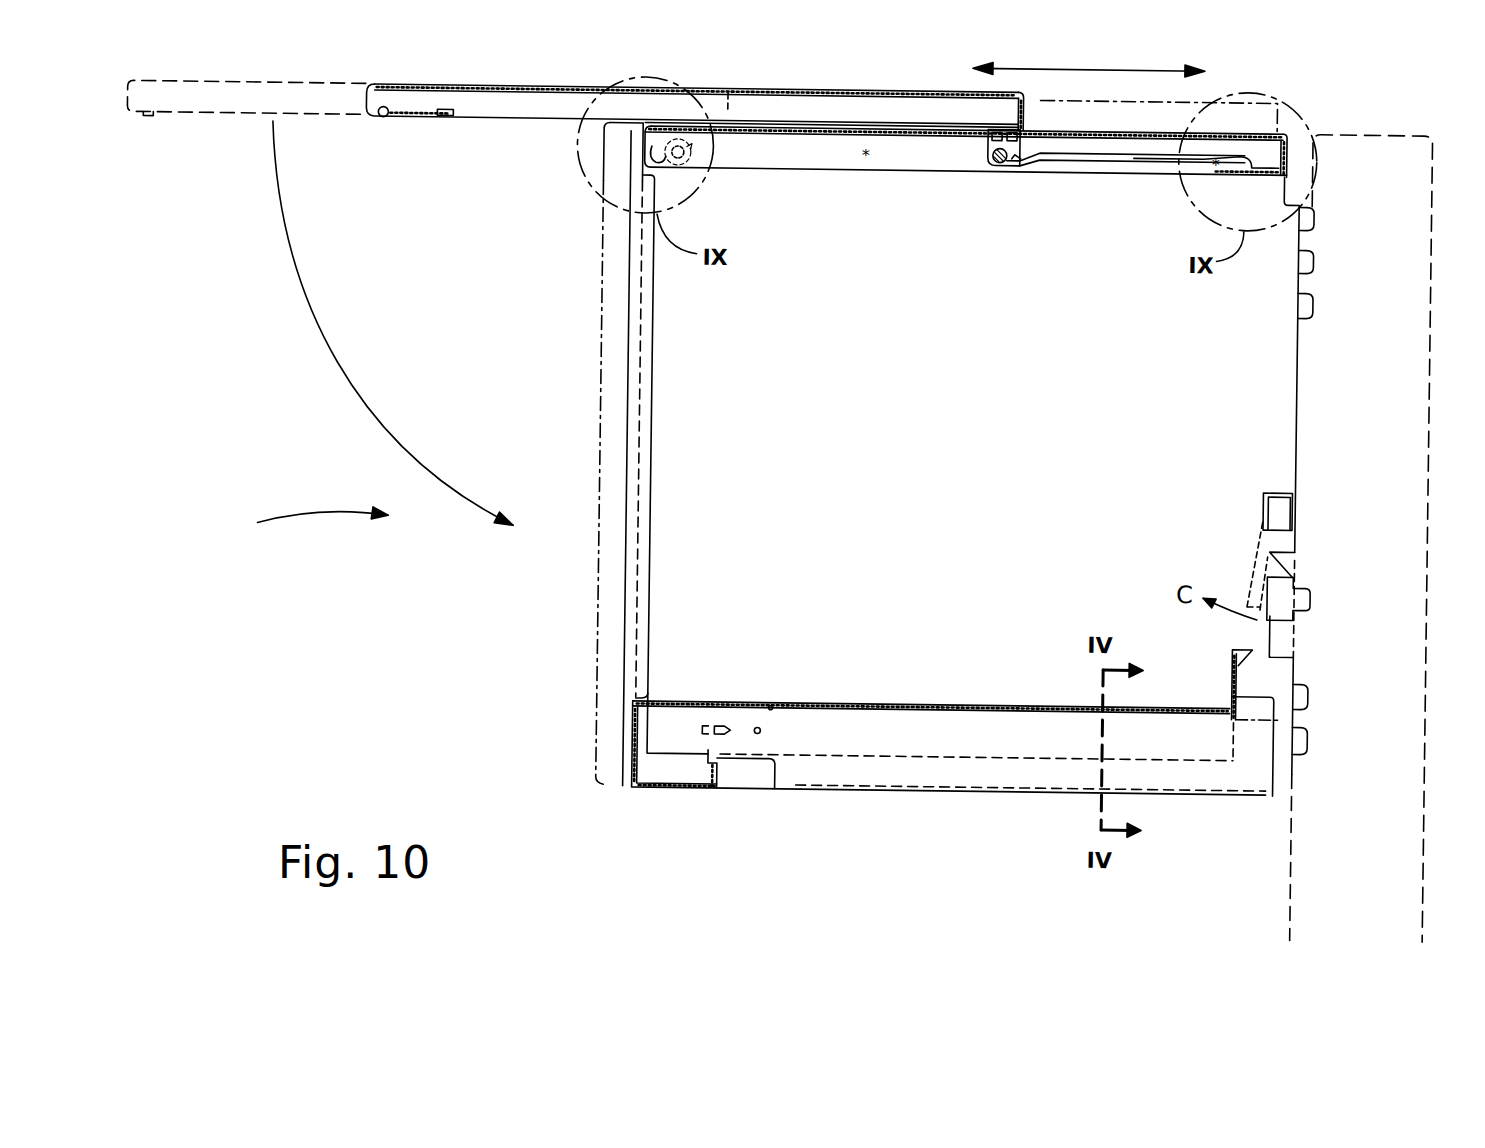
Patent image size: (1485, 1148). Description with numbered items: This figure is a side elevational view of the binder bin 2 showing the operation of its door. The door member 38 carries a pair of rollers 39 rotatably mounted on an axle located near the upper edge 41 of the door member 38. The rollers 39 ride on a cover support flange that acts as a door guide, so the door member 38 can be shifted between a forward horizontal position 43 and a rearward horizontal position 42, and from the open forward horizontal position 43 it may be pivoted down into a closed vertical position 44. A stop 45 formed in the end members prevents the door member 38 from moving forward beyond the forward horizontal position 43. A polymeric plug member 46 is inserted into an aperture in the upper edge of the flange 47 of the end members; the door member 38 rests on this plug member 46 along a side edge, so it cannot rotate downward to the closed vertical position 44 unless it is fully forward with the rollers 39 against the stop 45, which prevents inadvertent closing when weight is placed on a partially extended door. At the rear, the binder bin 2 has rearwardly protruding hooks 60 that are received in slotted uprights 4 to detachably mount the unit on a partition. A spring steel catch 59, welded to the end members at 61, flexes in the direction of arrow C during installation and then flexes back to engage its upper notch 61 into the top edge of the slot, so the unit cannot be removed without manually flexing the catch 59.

The binder bin 2 is at (377, 331).
The slotted uprights 4 is at (1434, 171).
The door member 38 is at (762, 92).
The rollers 39 is at (996, 165).
The upper edge 41 is at (1019, 101).
The rearward horizontal position 42 is at (1146, 98).
The forward horizontal position 43 is at (199, 125).
The closed vertical position 44 is at (603, 678).
The stop 45 is at (664, 125).
The plug member 46 is at (654, 132).
The flange 47 is at (819, 131).
The catch 59 is at (1291, 562).
The hooks 60 is at (1307, 308).
The upper notch 61 is at (1283, 500).